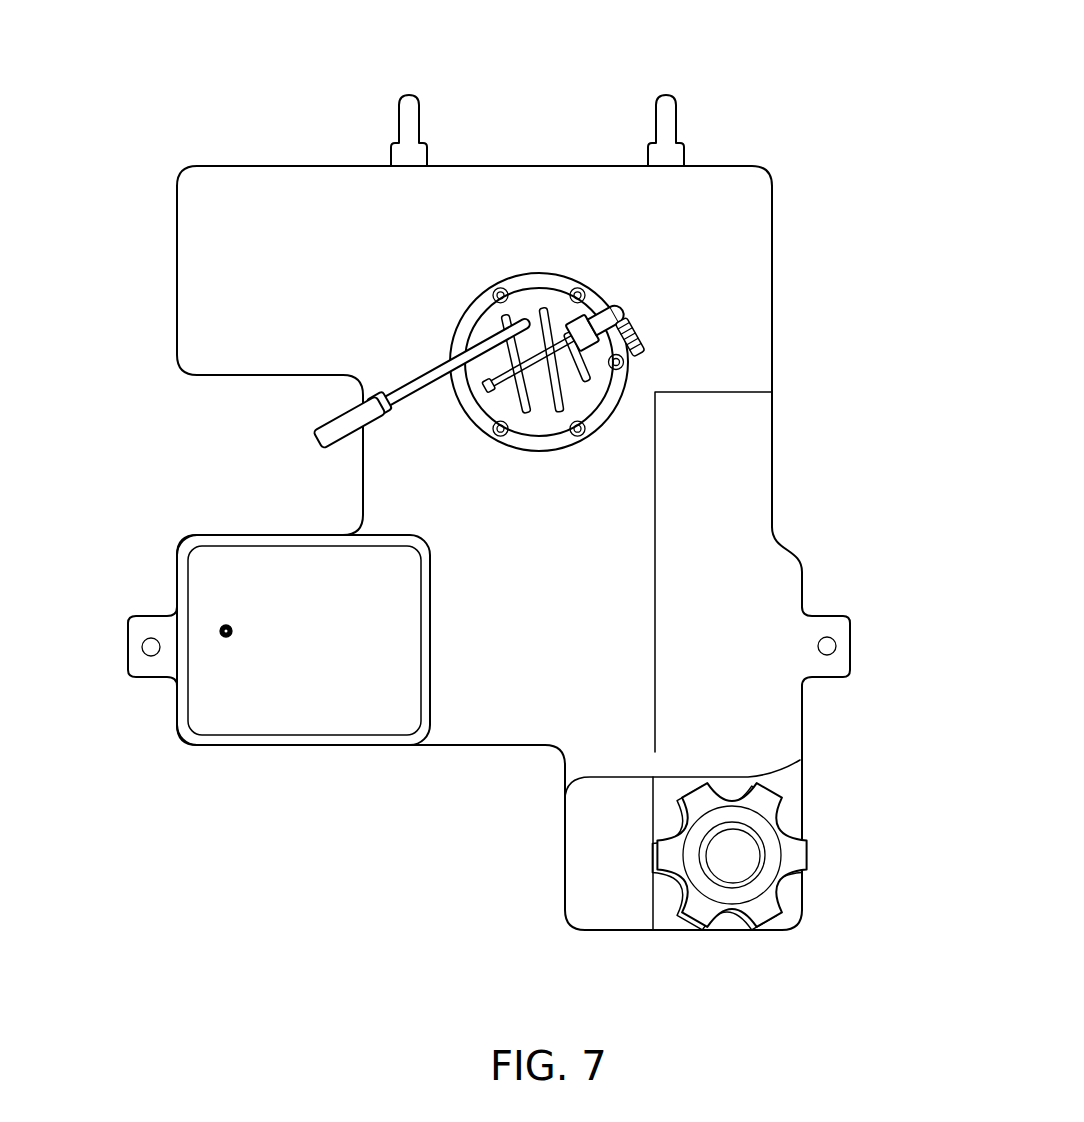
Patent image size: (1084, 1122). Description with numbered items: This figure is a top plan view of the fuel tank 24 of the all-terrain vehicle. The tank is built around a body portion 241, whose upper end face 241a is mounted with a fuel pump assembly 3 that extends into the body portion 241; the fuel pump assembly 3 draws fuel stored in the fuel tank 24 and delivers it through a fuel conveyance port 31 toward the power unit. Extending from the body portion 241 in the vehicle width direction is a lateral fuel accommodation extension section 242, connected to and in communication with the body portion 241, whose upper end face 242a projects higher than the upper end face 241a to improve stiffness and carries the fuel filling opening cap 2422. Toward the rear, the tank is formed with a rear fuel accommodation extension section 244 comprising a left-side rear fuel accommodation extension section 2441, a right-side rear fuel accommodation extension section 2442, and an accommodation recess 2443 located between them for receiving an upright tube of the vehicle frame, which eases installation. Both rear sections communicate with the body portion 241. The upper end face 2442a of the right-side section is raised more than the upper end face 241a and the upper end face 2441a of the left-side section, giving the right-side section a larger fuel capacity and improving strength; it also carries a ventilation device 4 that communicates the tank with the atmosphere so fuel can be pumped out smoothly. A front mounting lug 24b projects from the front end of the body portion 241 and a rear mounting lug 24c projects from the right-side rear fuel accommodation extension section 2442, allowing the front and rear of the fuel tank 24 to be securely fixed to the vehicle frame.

The fuel tank 24 is at (798, 145).
The front mounting lug 24b is at (838, 663).
The rear mounting lug 24c is at (140, 627).
The fuel pump assembly 3 is at (537, 293).
The fuel conveyance port 31 is at (624, 313).
The ventilation device 4 is at (223, 628).
The body portion 241 is at (755, 465).
The upper end face of the body portion 241a is at (545, 548).
The lateral fuel accommodation extension section 242 is at (578, 868).
The upper end face of the lateral fuel accommodation extension section 242a is at (667, 913).
The fuel filling opening cap 2422 is at (775, 857).
The rear fuel accommodation extension section 244 is at (237, 758).
The left-side rear fuel accommodation extension section 2441 is at (178, 310).
The upper end face of the left-side rear fuel accommodation extension section 2441a is at (253, 260).
The right-side rear fuel accommodation extension section 2442 is at (178, 716).
The upper end face of the right-side rear fuel accommodation extension section 2442a is at (315, 672).
The accommodation recess 2443 is at (228, 435).